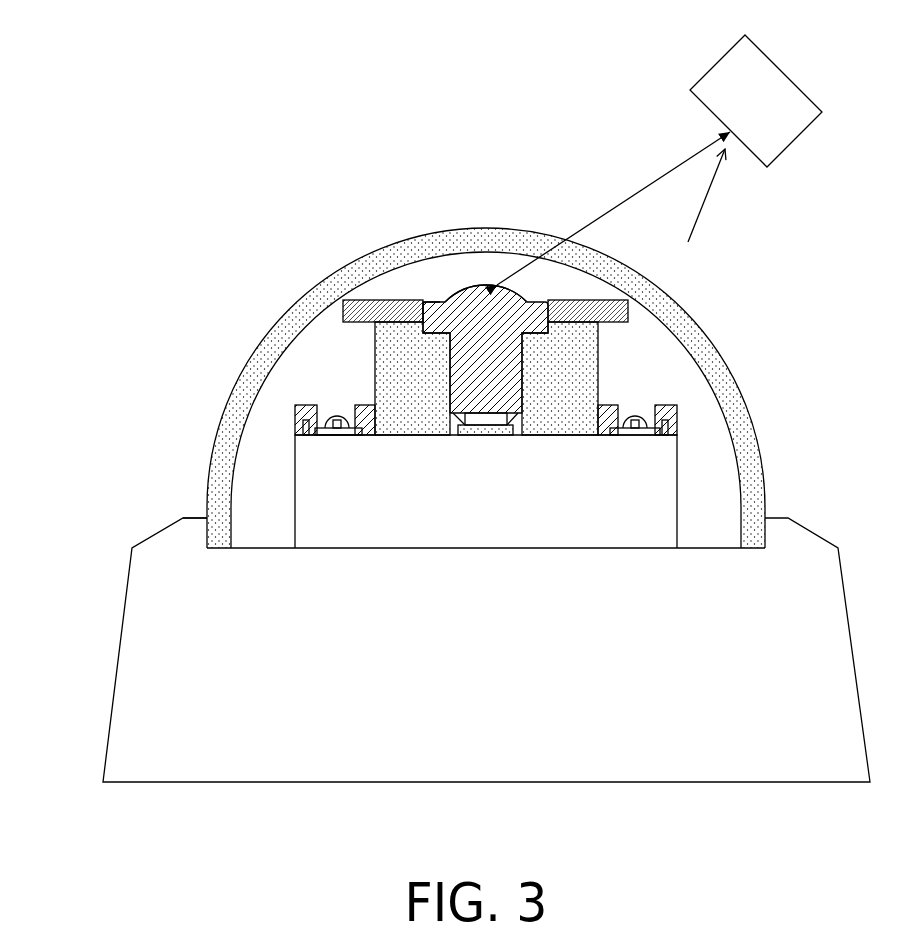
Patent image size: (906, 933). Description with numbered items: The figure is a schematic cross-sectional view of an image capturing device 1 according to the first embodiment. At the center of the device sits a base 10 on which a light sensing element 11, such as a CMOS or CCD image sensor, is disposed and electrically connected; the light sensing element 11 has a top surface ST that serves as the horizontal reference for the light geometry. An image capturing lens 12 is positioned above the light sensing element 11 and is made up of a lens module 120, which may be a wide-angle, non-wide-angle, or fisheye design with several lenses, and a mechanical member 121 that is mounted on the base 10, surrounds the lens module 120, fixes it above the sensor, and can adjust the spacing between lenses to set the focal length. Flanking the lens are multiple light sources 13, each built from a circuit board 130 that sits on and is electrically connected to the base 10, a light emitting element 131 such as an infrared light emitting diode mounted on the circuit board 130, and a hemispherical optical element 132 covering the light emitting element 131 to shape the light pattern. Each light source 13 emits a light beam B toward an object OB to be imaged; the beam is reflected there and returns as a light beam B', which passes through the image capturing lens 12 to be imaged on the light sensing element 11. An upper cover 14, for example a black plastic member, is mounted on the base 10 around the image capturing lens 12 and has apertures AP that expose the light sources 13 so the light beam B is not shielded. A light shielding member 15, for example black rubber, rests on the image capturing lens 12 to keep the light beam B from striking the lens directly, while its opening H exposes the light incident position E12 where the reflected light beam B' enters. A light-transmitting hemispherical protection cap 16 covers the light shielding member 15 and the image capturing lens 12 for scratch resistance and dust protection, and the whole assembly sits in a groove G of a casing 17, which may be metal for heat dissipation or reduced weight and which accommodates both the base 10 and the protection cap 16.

The image capturing device 1 is at (847, 853).
The base 10 is at (572, 533).
The light sensing element 11 is at (485, 435).
The image capturing lens 12 is at (381, 344).
The lens module 120 is at (400, 375).
The mechanical member 121 is at (467, 358).
The light source 13 is at (467, 538).
The circuit board 130 is at (343, 437).
The light emitting element 131 is at (335, 437).
The optical element 132 is at (323, 437).
The upper cover 14 is at (296, 410).
The light shielding member 15 is at (352, 305).
The protection cap 16 is at (355, 270).
The casing 17 is at (143, 643).
The aperture AP is at (354, 411).
The light beam B is at (713, 195).
The reflected light beam B' is at (613, 208).
The light incident position E12 is at (470, 286).
The groove G is at (208, 528).
The opening H is at (425, 299).
The object OB is at (780, 80).
The top surface ST is at (461, 425).